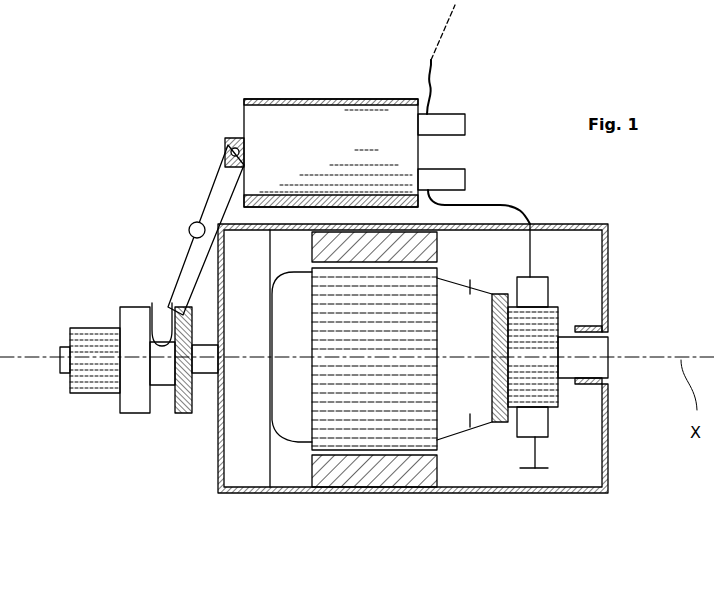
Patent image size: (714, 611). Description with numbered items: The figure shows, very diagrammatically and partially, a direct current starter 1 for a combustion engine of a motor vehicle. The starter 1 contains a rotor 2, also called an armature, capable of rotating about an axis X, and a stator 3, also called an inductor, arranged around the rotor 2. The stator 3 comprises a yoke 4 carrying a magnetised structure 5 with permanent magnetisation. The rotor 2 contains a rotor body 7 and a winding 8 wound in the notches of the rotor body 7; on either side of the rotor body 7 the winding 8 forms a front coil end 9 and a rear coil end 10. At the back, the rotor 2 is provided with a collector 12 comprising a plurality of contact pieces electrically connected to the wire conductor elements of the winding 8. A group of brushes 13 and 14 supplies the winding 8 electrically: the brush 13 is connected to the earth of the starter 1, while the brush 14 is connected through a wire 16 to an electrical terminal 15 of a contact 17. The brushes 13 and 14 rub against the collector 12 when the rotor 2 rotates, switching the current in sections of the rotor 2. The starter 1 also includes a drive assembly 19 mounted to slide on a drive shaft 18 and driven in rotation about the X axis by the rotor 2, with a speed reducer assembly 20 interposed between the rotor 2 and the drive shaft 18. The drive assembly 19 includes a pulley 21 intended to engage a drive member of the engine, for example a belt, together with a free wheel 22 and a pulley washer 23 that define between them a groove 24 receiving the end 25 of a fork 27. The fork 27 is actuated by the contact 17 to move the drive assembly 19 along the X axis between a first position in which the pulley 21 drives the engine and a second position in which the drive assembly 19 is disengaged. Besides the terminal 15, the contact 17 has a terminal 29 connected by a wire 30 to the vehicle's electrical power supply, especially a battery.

The starter 1 is at (574, 508).
The rotor 2 is at (447, 437).
The stator 3 is at (362, 492).
The yoke 4 is at (393, 489).
The magnetised structure 5 is at (442, 246).
The rotor body 7 is at (347, 452).
The winding 8 is at (490, 422).
The front coil end 9 is at (297, 465).
The rear coil end 10 is at (475, 432).
The collector 12 is at (561, 335).
The brush 13 is at (546, 428).
The brush 14 is at (548, 290).
The electrical terminal 15 is at (466, 180).
The wire 16 is at (522, 205).
The contact 17 is at (332, 108).
The drive shaft 18 is at (64, 348).
The drive assembly 19 is at (130, 430).
The speed reducer assembly 20 is at (250, 462).
The pulley 21 is at (92, 328).
The free wheel 22 is at (132, 308).
The pulley washer 23 is at (183, 415).
The groove 24 is at (163, 388).
The end 25 is at (162, 318).
The fork 27 is at (212, 188).
The terminal 29 is at (466, 122).
The wire 30 is at (422, 70).